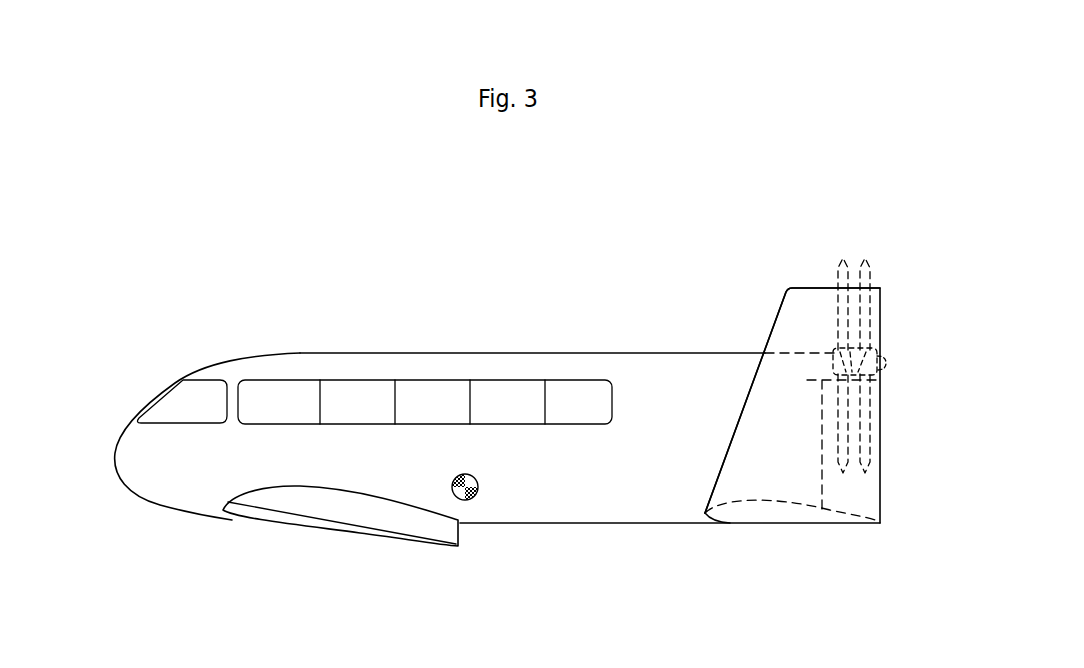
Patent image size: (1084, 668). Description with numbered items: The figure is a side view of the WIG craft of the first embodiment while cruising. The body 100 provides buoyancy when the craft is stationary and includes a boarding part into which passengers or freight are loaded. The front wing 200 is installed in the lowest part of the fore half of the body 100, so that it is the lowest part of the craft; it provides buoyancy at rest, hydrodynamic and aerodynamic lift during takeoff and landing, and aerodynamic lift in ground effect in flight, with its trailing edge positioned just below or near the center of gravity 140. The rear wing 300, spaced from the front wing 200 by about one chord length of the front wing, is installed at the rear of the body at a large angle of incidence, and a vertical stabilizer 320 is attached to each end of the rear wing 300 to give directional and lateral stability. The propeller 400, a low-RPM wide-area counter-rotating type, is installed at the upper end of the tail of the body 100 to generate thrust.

The body 100 is at (395, 368).
The center of gravity 140 is at (477, 497).
The front wing 200 is at (306, 516).
The rear wing 300 is at (768, 511).
The vertical stabilizer 320 is at (797, 327).
The propeller 400 is at (872, 268).